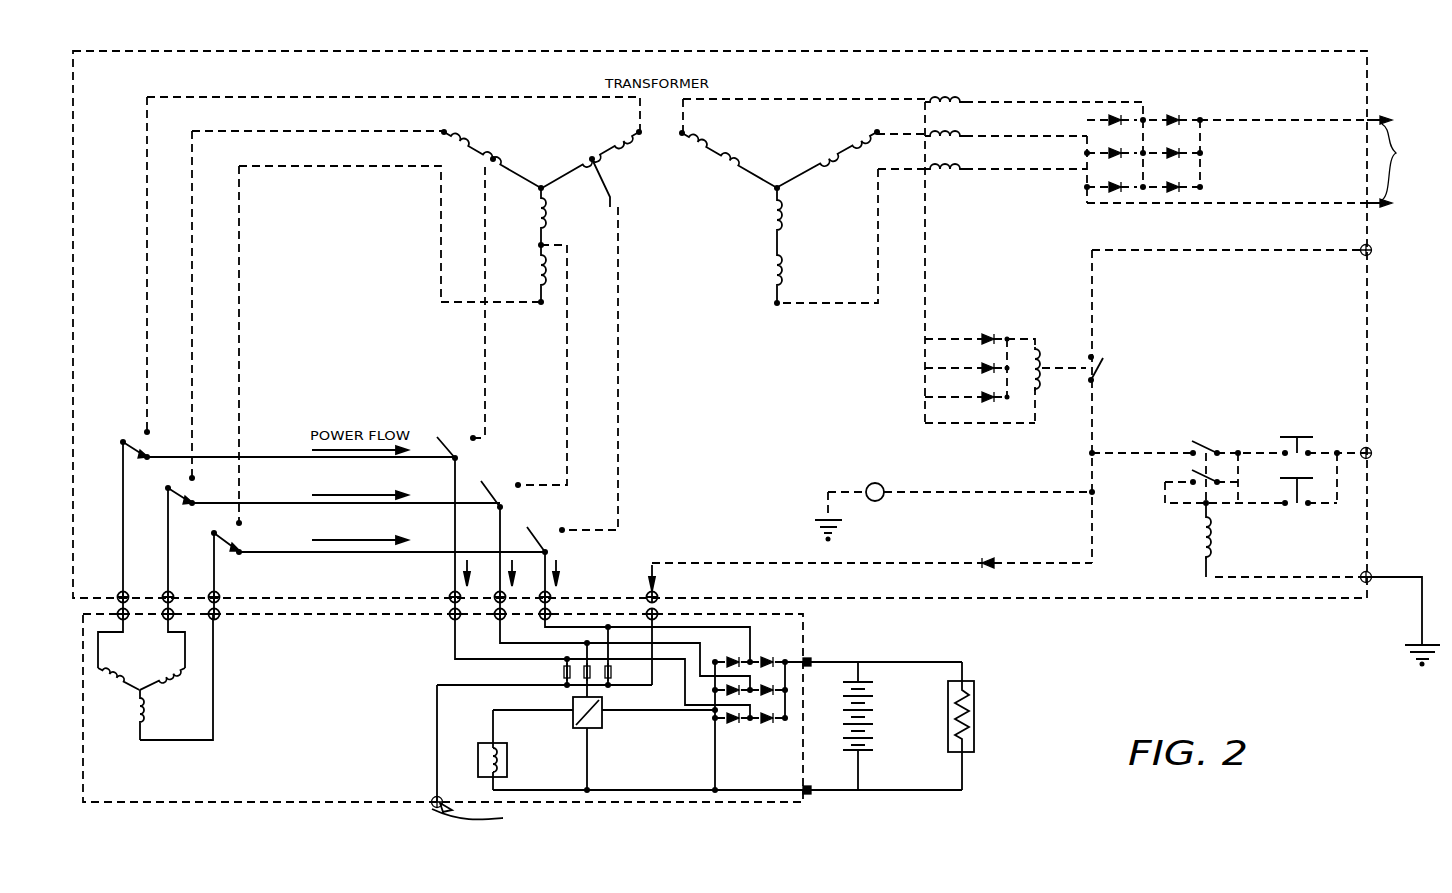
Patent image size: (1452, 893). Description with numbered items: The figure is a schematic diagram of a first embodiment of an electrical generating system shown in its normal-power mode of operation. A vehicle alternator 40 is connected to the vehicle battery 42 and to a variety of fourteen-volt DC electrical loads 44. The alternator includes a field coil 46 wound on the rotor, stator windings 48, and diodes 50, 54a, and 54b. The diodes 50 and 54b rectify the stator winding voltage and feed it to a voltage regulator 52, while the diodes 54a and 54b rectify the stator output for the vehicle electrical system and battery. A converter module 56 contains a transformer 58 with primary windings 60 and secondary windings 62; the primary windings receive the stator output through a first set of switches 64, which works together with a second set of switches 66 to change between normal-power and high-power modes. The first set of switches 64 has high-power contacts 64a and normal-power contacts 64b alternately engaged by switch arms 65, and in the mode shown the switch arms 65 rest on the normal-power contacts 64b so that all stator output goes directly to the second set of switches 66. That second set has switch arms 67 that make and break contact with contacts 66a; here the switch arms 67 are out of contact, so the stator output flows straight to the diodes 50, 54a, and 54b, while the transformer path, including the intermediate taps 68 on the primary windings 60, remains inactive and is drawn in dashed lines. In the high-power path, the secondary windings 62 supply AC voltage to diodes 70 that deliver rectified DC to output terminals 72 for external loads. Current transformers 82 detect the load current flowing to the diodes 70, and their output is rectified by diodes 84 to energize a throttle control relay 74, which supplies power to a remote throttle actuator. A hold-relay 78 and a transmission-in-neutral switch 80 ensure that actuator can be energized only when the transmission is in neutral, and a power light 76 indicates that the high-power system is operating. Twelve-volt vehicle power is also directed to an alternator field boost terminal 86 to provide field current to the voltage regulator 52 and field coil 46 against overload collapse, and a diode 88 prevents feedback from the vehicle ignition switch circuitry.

The vehicle alternator 40 is at (167, 807).
The vehicle battery 42 is at (873, 745).
The 14-volt DC electrical loads 44 is at (977, 677).
The field coil 46 is at (485, 740).
The stator windings 48 is at (160, 690).
The diodes 50 is at (557, 672).
The voltage regulator 52 is at (600, 735).
The diodes 54a is at (767, 655).
The diodes 54b is at (720, 708).
The converter module 56 is at (1332, 603).
The transformer 58 is at (660, 215).
The primary windings 60 is at (541, 214).
The secondary windings 62 is at (782, 163).
The first set of switches 64 is at (316, 502).
The high-power contacts 64a is at (240, 521).
The normal-power contacts 64b is at (239, 554).
The switch arms 65 is at (148, 457).
The second set of switches 66 is at (523, 496).
The contacts 66a is at (476, 440).
The switch arms 67 is at (446, 450).
The intermediate taps 68 is at (494, 162).
The diodes 70 is at (1158, 105).
The output terminals 72 is at (1397, 162).
The throttle control relay 74 is at (1073, 354).
The power light 76 is at (875, 483).
The hold-relay 78 is at (1176, 416).
The transmission-in-neutral switch 80 is at (1291, 411).
The current transformers 82 is at (958, 91).
The diodes 84 is at (987, 334).
The alternator field boost terminal 86 is at (872, 556).
The diode 88 is at (990, 558).